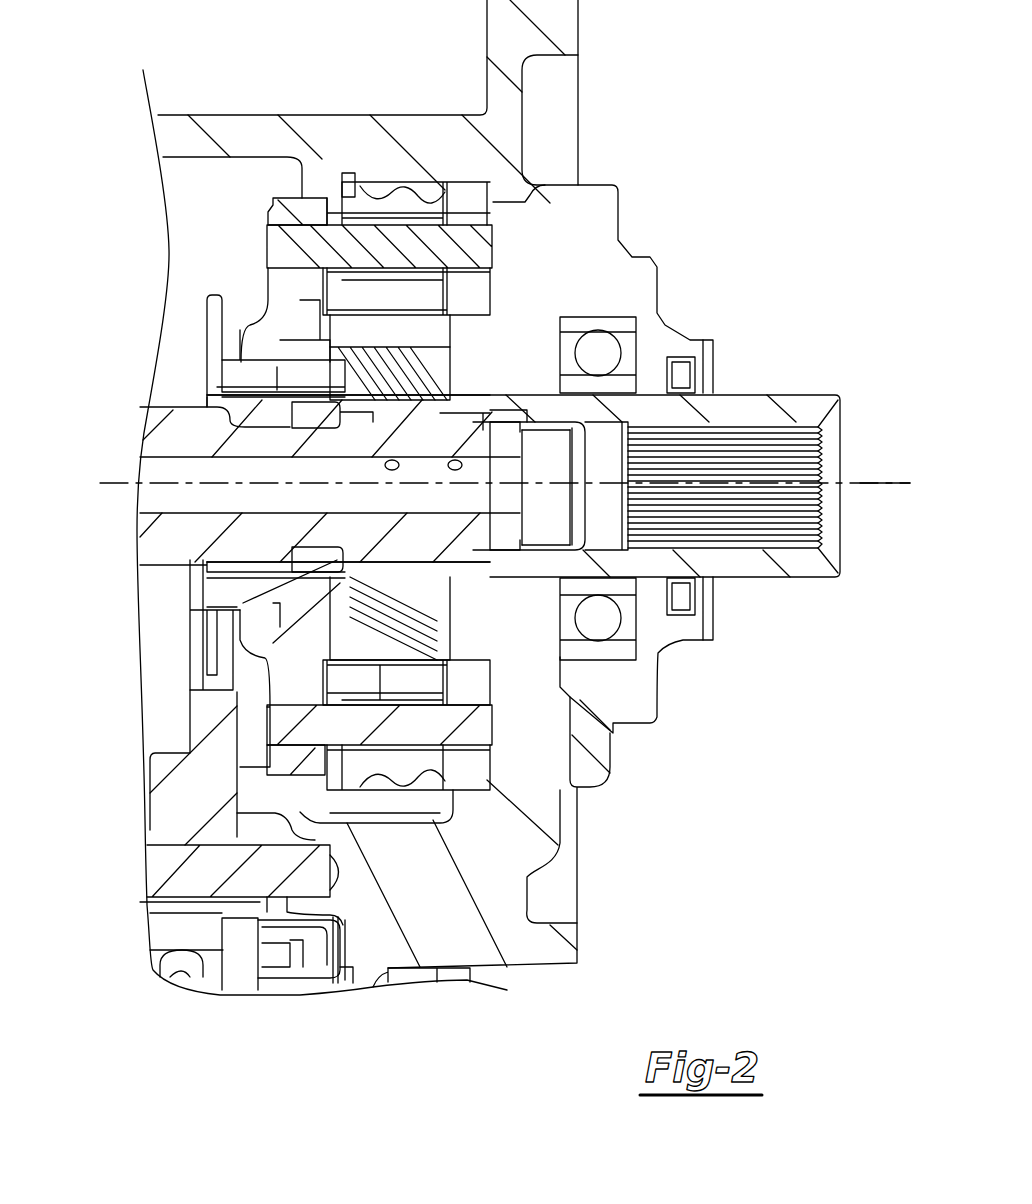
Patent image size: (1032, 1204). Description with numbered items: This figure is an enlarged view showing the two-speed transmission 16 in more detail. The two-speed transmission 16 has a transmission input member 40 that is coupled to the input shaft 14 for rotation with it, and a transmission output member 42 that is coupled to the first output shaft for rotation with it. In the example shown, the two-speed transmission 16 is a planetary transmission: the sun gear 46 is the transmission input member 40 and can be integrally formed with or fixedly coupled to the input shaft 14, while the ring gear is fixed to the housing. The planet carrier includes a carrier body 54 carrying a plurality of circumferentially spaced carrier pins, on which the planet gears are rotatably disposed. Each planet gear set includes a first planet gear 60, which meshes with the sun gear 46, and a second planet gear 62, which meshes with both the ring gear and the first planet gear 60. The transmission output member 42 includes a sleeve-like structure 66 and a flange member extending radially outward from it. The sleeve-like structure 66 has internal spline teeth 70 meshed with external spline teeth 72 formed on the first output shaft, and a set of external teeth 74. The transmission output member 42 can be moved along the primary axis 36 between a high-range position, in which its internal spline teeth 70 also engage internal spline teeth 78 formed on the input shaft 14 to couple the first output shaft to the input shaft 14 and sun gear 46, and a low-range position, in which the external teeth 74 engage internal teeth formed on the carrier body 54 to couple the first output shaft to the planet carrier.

The input shaft 14 is at (773, 572).
The two-speed transmission 16 is at (540, 232).
The primary axis 36 is at (873, 485).
The transmission input member 40 is at (500, 417).
The sun gear 46 is at (713, 343).
The transmission output member 42 is at (223, 372).
The carrier body 54 is at (293, 677).
The first planet gear 60 is at (450, 413).
The second planet gear 62 is at (420, 305).
The sleeve-like structure 66 is at (283, 597).
The internal spline teeth 70 is at (230, 387).
The external spline teeth 72 is at (229, 405).
The external teeth 74 is at (342, 355).
The internal spline teeth 78 is at (312, 390).